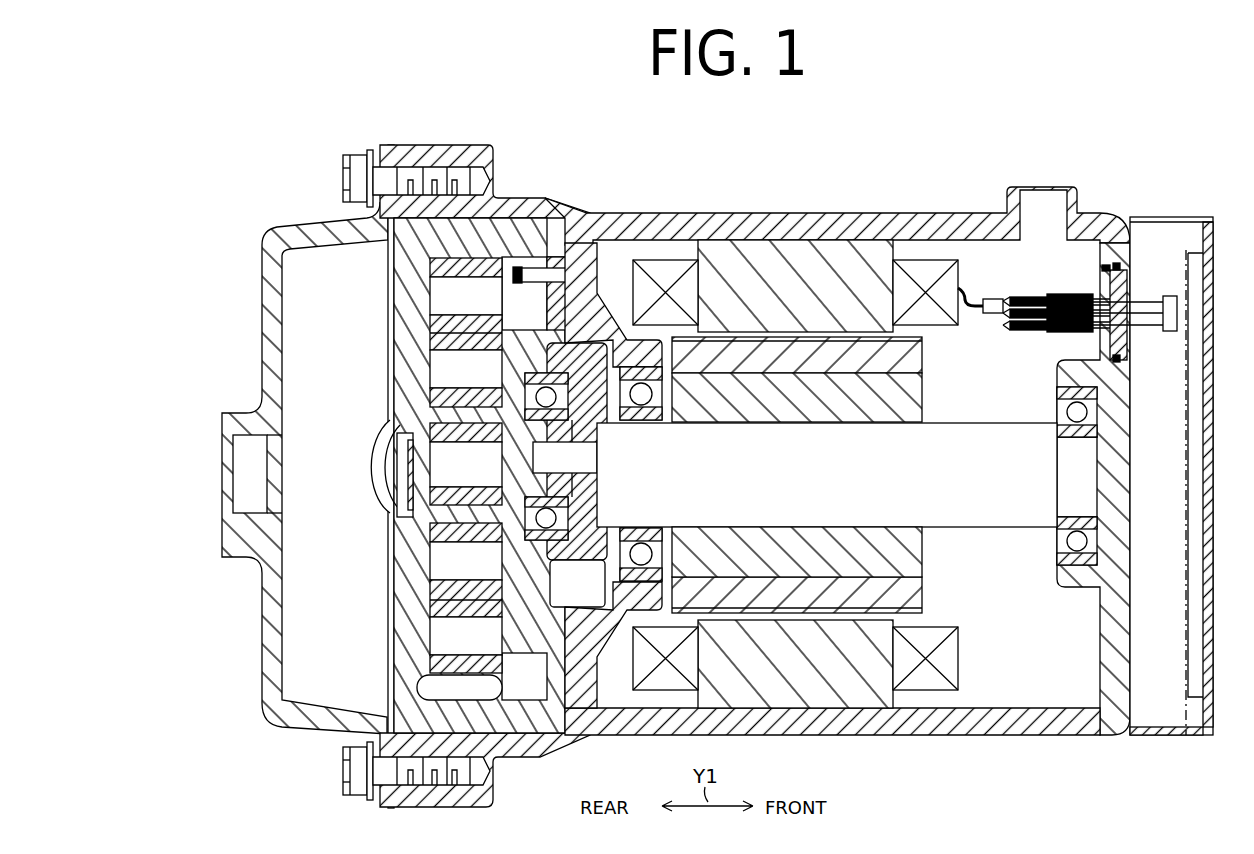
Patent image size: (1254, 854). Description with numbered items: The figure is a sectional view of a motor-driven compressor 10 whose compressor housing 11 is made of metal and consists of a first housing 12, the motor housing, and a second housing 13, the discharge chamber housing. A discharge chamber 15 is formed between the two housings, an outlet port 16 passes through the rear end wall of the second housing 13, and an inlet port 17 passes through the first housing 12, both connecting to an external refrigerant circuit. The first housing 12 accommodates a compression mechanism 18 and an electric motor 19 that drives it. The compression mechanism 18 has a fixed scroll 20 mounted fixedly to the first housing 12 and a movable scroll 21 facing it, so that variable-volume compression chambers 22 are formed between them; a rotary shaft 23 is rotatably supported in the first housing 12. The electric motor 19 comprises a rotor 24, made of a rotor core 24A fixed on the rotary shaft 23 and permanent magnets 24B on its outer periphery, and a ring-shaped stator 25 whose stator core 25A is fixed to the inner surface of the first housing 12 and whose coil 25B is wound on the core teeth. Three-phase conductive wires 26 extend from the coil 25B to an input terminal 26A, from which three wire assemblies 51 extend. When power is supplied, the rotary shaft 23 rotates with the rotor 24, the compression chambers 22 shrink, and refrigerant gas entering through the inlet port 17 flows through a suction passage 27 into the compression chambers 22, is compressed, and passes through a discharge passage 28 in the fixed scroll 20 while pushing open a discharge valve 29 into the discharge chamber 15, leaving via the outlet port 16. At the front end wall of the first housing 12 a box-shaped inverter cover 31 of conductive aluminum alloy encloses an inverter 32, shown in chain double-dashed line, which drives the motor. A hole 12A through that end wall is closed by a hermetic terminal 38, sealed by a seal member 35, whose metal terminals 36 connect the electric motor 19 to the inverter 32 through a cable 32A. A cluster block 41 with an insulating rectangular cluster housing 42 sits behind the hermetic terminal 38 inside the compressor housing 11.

The motor-driven compressor 10 is at (297, 151).
The compressor housing 11 is at (573, 476).
The first housing (motor housing) 12 is at (858, 225).
The hole 12A is at (1115, 344).
The second housing (discharge chamber housing) 13 is at (308, 230).
The discharge chamber 15 is at (349, 612).
The outlet port 16 is at (238, 508).
The inlet port 17 is at (1064, 190).
The compression mechanism 18 is at (608, 652).
The electric motor 19 is at (765, 719).
The fixed scroll 20 is at (395, 322).
The movable scroll 21 is at (555, 586).
The compression chambers 22 is at (478, 647).
The rotary shaft 23 is at (976, 424).
The rotor 24 is at (848, 475).
The rotor core 24A is at (924, 552).
The permanent magnets 24B is at (924, 584).
The stator 25 is at (795, 523).
The stator core 25A is at (880, 692).
The coil 25B is at (930, 690).
The conductive wires 26 is at (973, 295).
The input terminal 26A is at (992, 314).
The suction passage 27 is at (560, 690).
The discharge passage 28 is at (405, 486).
The discharge valve 29 is at (405, 462).
The inverter cover 31 is at (1186, 217).
The inverter 32 is at (1180, 385).
The cable 32A is at (1157, 325).
The seal member 35 is at (1103, 267).
The metal terminals 36 is at (1148, 300).
The hermetic terminal 38 is at (1122, 268).
The cluster block 41 is at (1045, 356).
The cluster housing 42 is at (1053, 293).
The wire assemblies 51 is at (1010, 297).